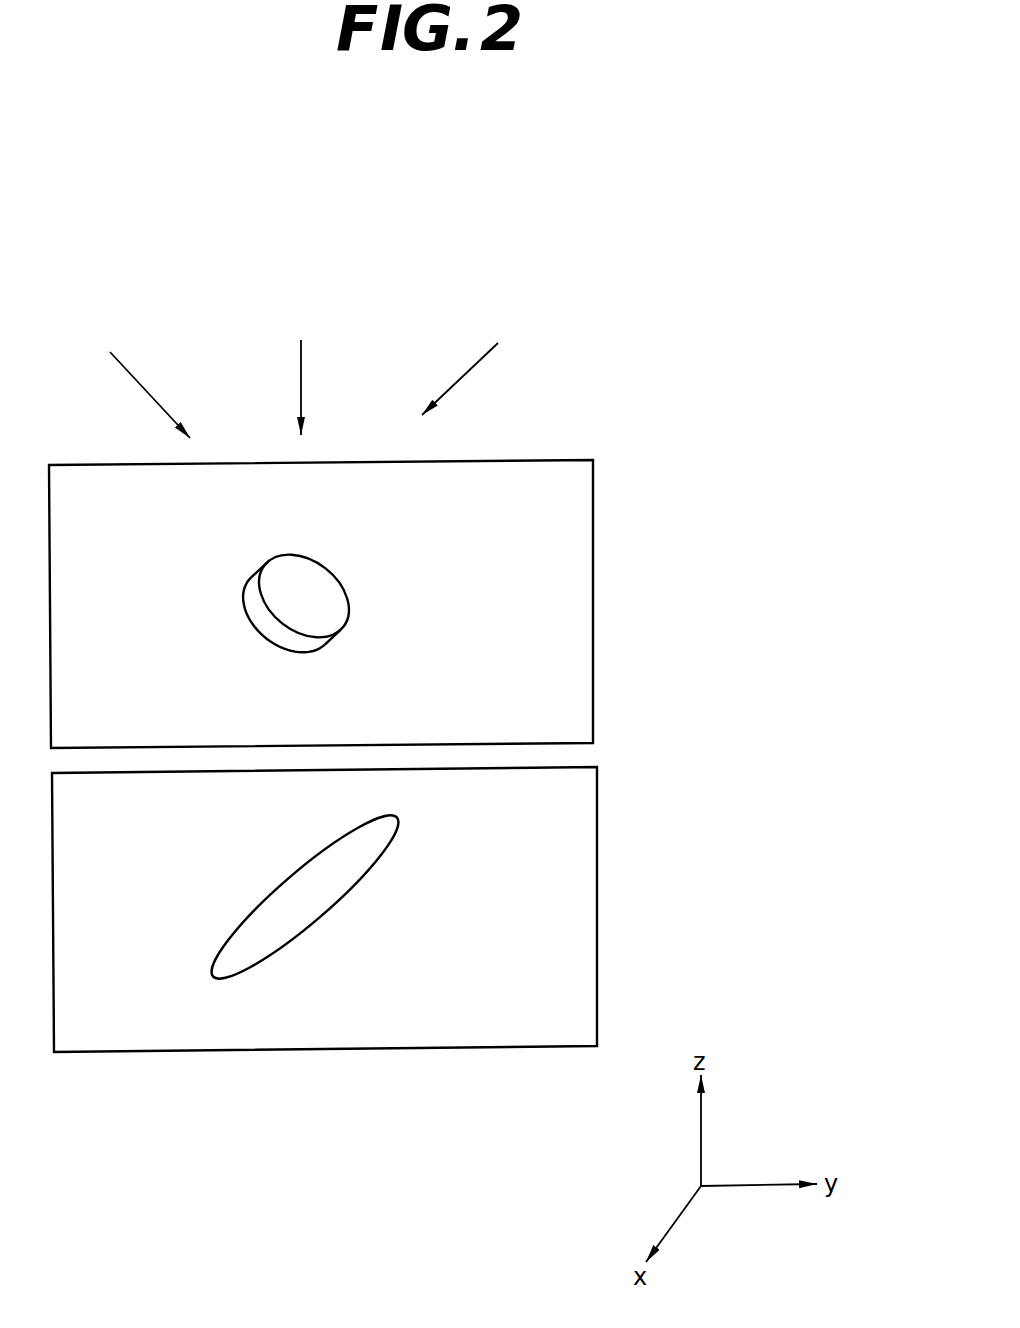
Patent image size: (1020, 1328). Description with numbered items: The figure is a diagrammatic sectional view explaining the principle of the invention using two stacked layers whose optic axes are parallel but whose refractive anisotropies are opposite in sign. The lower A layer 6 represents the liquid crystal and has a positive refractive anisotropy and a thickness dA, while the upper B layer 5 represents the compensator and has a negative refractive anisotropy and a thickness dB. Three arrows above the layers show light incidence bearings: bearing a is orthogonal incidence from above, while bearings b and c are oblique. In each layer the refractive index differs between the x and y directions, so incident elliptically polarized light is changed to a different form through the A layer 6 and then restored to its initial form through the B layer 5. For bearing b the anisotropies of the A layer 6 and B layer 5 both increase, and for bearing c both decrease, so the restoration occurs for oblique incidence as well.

The B layer 5 is at (573, 504).
The A layer 6 is at (580, 823).
The incidence bearing a is at (299, 371).
The incidence bearing b is at (147, 379).
The incidence bearing c is at (467, 360).